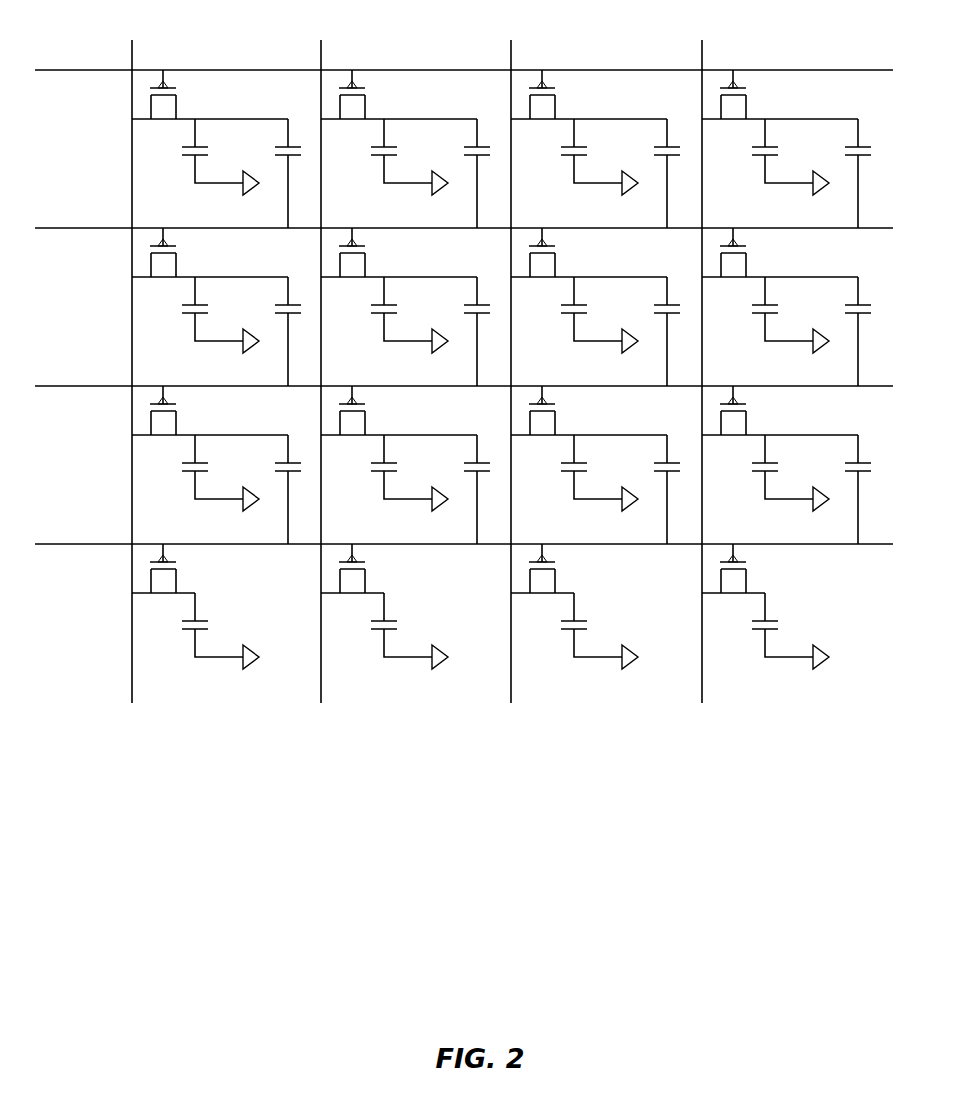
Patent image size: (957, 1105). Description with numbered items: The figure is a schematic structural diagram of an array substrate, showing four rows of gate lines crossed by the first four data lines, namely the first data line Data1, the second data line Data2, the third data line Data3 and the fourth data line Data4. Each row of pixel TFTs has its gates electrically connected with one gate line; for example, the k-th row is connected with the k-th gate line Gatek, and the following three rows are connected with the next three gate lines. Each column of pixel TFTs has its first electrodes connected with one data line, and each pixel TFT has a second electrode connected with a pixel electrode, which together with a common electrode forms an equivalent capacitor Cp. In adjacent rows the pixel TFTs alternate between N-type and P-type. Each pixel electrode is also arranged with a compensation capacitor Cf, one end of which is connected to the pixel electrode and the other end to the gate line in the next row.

The equivalent capacitor Cp is at (495, 394).
The compensation capacitor Cf is at (560, 331).
The first data line Data1 is at (132, 358).
The second data line Data2 is at (321, 358).
The third data line Data3 is at (511, 358).
The fourth data line Data4 is at (702, 358).
The k-th gate line Gatek is at (464, 83).